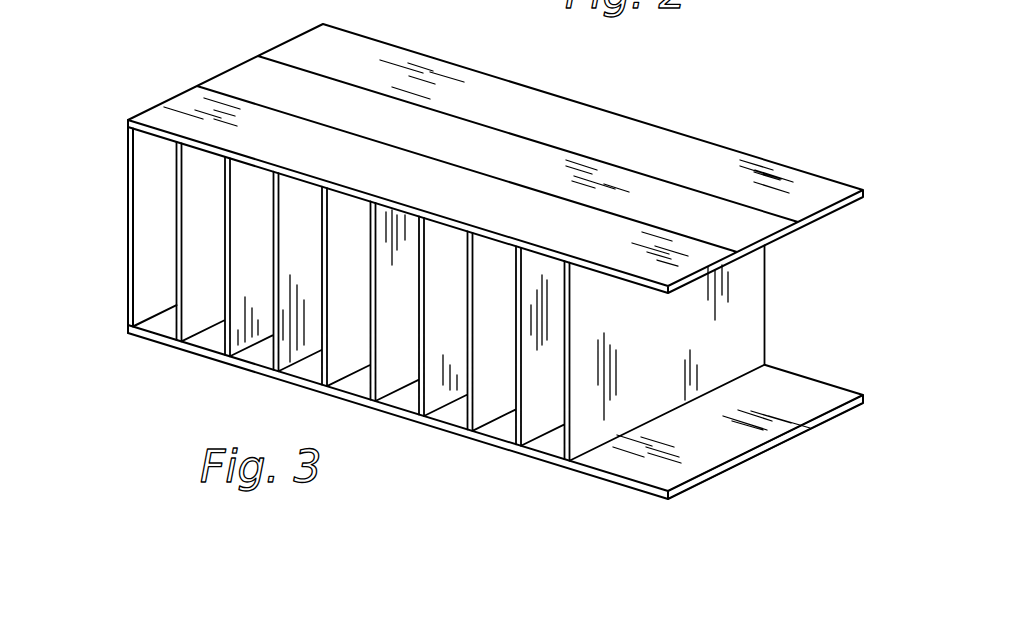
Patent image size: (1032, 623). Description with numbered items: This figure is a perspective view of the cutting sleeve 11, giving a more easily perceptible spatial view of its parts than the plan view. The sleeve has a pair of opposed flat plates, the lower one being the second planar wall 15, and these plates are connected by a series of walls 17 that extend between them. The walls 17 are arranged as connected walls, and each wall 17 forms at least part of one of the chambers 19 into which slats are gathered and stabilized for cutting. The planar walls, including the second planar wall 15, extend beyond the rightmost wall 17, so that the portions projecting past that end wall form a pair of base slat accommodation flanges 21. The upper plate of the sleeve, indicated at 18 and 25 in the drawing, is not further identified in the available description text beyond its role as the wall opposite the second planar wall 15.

The cutting sleeve 11 is at (479, 251).
The second planar wall 15 is at (148, 333).
The walls 17 is at (297, 270).
The top plate 18 is at (352, 47).
The chambers 19 is at (556, 439).
The base slat accommodation flanges 21 is at (830, 392).
The top plate strips 25 is at (292, 63).